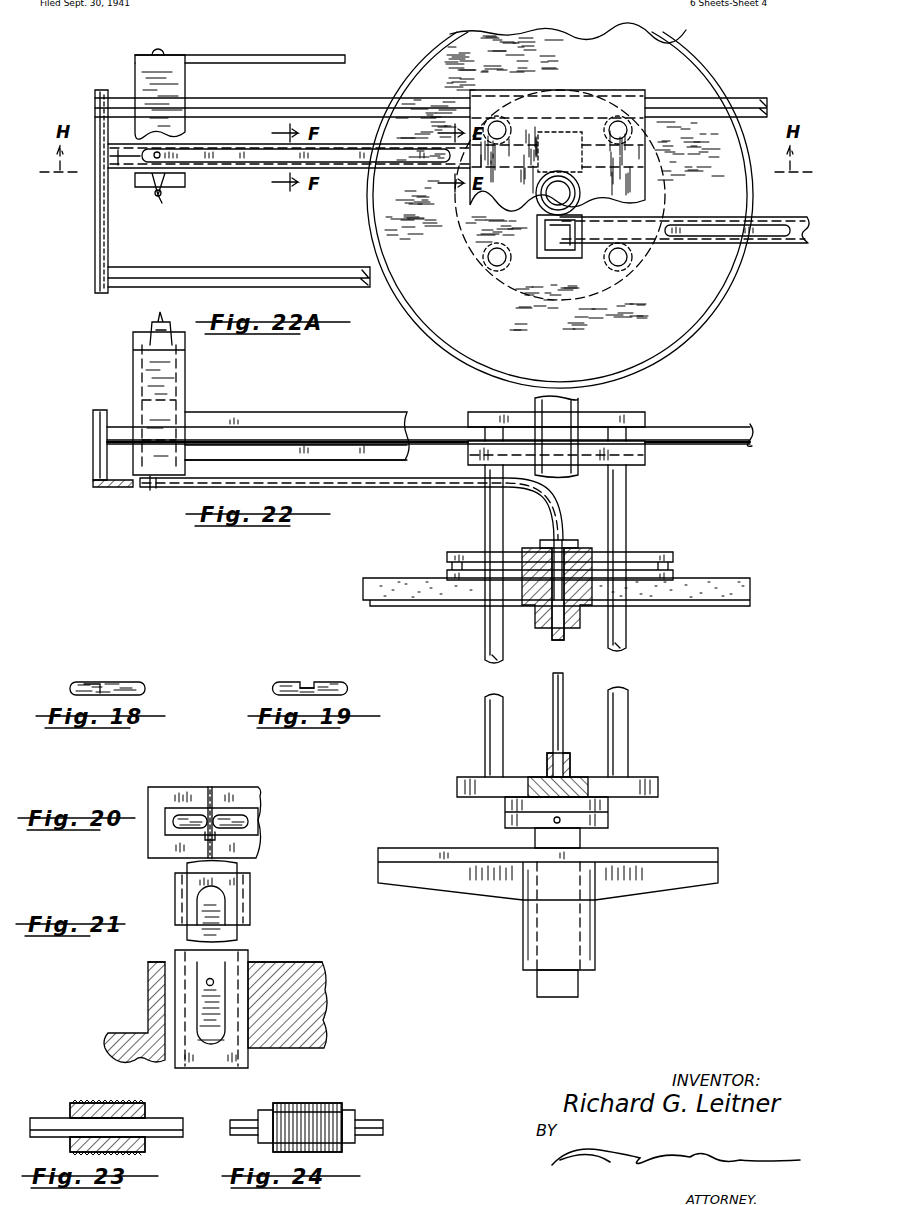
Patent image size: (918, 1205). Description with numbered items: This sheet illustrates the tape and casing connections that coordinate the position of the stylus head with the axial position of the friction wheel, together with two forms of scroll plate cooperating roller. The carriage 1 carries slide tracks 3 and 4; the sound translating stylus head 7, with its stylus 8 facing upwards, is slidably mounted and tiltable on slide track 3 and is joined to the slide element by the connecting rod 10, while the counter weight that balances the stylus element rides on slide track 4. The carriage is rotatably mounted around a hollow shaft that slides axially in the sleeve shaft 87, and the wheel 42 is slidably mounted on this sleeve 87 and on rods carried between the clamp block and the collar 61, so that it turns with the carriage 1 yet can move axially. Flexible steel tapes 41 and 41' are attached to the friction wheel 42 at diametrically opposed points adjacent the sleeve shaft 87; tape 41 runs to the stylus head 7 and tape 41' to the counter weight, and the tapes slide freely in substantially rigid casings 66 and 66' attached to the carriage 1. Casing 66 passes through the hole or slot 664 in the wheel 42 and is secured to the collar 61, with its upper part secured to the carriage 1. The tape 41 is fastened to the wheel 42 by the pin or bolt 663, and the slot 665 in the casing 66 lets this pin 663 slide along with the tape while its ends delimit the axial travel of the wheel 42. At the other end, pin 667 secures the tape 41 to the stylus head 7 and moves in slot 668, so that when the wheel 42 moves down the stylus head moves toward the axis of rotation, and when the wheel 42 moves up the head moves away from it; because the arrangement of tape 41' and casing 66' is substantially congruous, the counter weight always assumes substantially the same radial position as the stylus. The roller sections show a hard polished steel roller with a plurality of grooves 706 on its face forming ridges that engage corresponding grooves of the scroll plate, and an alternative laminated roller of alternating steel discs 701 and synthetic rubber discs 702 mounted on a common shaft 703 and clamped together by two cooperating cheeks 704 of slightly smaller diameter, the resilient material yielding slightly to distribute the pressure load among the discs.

In FIG. 22A, the carriage 1 is at (100, 213).
In FIG. 22, the carriage 1 is at (98, 455).
In FIG. 22A, the slide track 3 is at (360, 96).
In FIG. 22, the slide track 3 is at (430, 435).
In FIG. 22A, the slide track 4 is at (284, 272).
In FIG. 22, the slide track 4 is at (336, 420).
In FIG. 22A, the sound translating stylus head 7 is at (145, 74).
In FIG. 22, the sound translating stylus head 7 is at (170, 388).
In FIG. 22A, the stylus 8 is at (160, 198).
In FIG. 22, the stylus 8 is at (150, 327).
In FIG. 22A, the connecting rod 10 is at (295, 58).
In FIG. 22, the connecting rod 10 is at (292, 418).
In FIG. 22A, the steel tape 41 is at (350, 112).
In FIG. 22, the steel tape 41 is at (351, 532).
In FIG. 18, the steel tape 41 is at (107, 673).
In FIG. 19, the steel tape 41 is at (310, 673).
In FIG. 20, the steel tape 41 is at (210, 794).
In FIG. 21, the steel tape 41 is at (228, 965).
In FIG. 22A, the steel tape 41' is at (643, 272).
In FIG. 22A, the wheel 42 is at (672, 342).
In FIG. 22, the wheel 42 is at (720, 607).
In FIG. 21, the wheel 42 is at (305, 993).
In FIG. 22, the collar 61 is at (610, 800).
In FIG. 22A, the casing 66 is at (124, 182).
In FIG. 22, the casing 66 is at (349, 628).
In FIG. 18, the casing 66 is at (83, 671).
In FIG. 19, the casing 66 is at (290, 668).
In FIG. 20, the casing 66 is at (259, 822).
In FIG. 21, the casing 66 is at (230, 899).
In FIG. 22A, the casing 66' is at (724, 249).
In FIG. 22A, the sleeve shaft 87 is at (548, 198).
In FIG. 22, the pin or bolt 663 is at (562, 540).
In FIG. 20, the pin or bolt 663 is at (195, 835).
In FIG. 21, the pin or bolt 663 is at (206, 982).
In FIG. 22A, the hole or slot 664 is at (560, 153).
In FIG. 22, the hole or slot 664 is at (545, 550).
In FIG. 20, the hole or slot 664 is at (245, 815).
In FIG. 21, the slot 665 is at (222, 900).
In FIG. 22A, the pin 667 is at (160, 153).
In FIG. 22, the pin 667 is at (152, 492).
In FIG. 22A, the slot 668 is at (285, 160).
In FIG. 24, the steel disc 701 is at (268, 1110).
In FIG. 24, the synthetic rubber disc 702 is at (285, 1106).
In FIG. 24, the common shaft 703 is at (380, 1127).
In FIG. 24, the cheek 704 is at (350, 1110).
In FIG. 23, the grooves 706 is at (118, 1090).